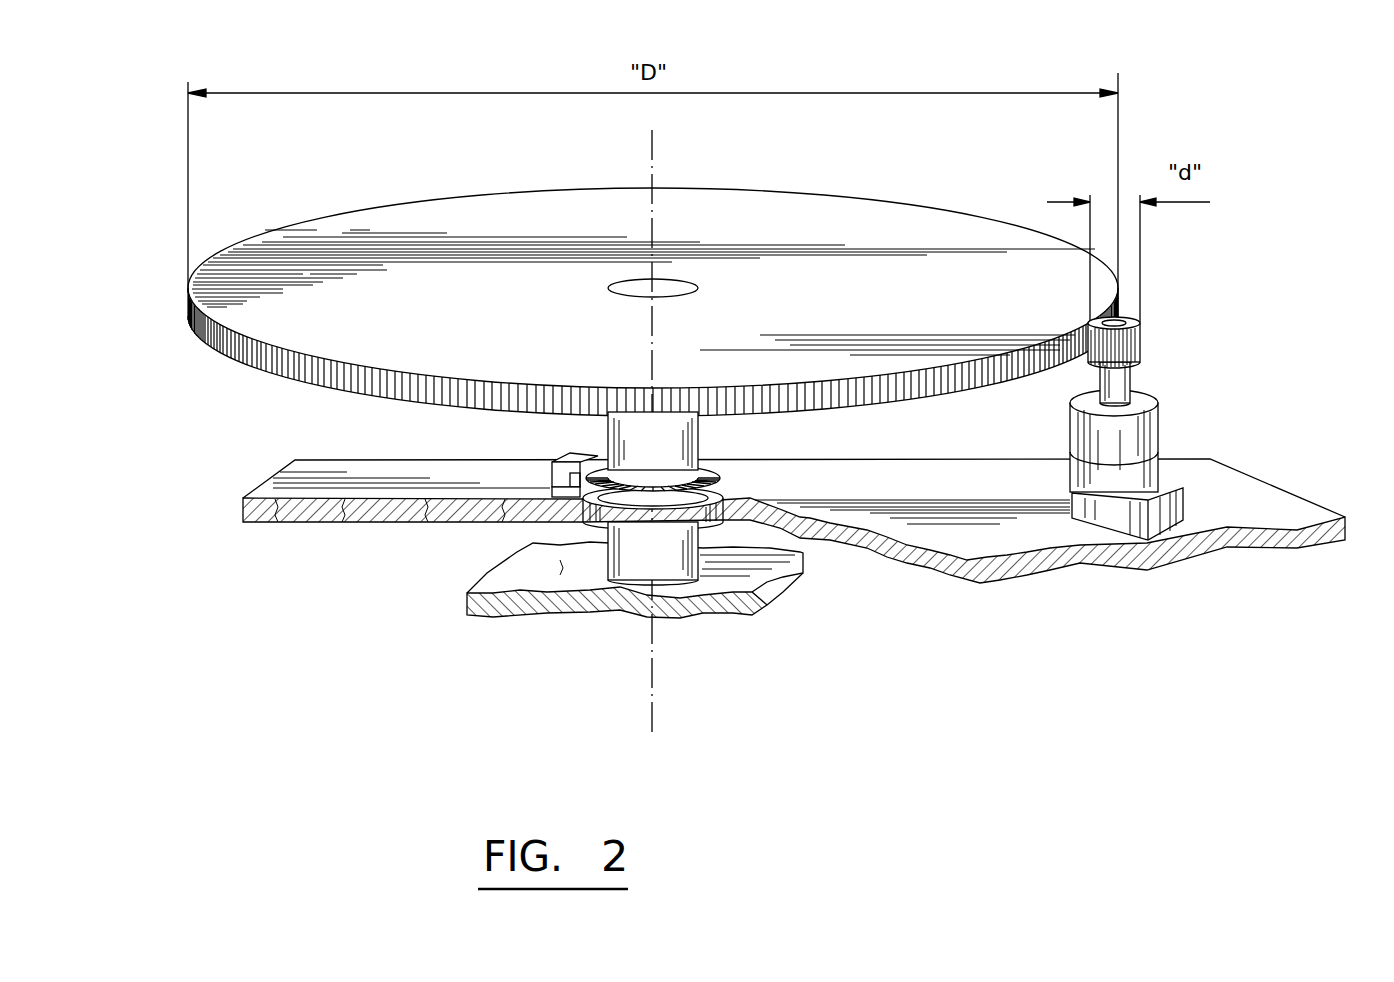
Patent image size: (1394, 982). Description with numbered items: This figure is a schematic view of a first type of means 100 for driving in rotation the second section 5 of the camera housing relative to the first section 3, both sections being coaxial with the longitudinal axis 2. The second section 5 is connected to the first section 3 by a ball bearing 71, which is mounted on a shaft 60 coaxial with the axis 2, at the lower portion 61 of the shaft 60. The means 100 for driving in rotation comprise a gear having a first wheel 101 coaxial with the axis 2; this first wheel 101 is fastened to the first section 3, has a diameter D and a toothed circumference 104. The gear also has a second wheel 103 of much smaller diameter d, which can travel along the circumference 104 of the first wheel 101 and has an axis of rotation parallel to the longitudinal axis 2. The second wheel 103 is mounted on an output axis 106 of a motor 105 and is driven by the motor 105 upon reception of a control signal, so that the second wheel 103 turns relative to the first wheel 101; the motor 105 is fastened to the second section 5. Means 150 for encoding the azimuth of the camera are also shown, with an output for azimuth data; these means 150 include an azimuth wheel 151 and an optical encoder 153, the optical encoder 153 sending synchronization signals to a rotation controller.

The longitudinal axis 2 is at (652, 133).
The first section 3 is at (492, 573).
The second section 5 is at (1003, 545).
The shaft 60 is at (598, 432).
The lower portion 61 is at (563, 456).
The ball bearing 71 is at (618, 530).
The means for driving in rotation 100 is at (1178, 317).
The first wheel 101 is at (965, 208).
The second wheel 103 is at (1138, 317).
The toothed circumference 104 is at (196, 334).
The motor 105 is at (1160, 427).
The output axis 106 is at (1133, 382).
The means for encoding the azimuth 150 is at (718, 448).
The azimuth wheel 151 is at (733, 472).
The optical encoder 153 is at (560, 492).